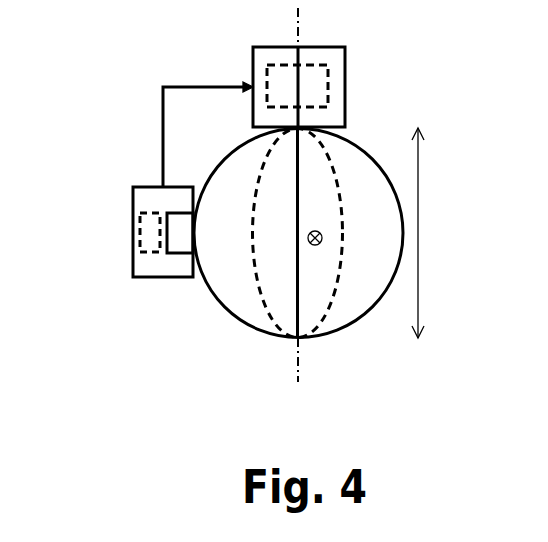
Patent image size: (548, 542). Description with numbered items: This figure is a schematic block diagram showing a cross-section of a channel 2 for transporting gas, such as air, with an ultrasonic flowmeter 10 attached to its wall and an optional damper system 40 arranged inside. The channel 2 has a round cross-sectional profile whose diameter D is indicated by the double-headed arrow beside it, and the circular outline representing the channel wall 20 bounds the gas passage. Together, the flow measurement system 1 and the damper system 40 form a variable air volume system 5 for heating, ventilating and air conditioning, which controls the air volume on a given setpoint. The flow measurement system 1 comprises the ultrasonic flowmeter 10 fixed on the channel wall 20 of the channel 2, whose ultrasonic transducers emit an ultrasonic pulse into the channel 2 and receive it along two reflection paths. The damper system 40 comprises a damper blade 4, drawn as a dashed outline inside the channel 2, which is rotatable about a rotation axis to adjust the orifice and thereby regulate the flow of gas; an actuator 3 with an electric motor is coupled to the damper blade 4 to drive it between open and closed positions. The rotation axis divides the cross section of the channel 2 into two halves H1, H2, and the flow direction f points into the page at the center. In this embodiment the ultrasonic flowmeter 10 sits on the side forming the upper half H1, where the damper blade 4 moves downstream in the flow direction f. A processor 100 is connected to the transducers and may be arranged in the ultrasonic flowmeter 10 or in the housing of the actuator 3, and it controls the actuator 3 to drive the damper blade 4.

The flow measurement system 1 is at (100, 290).
The channel 2 is at (222, 171).
The actuator 3 is at (337, 85).
The damper blade 4 is at (328, 275).
The variable air volume (VAV) system 5 is at (137, 58).
The ultrasonic flowmeter 10 is at (150, 265).
The surface of ball 20 is at (349, 330).
The damper system 40 is at (358, 118).
The processor 100 is at (283, 75).
The upper half H1 is at (237, 243).
The lower half H2 is at (388, 243).
The flow direction f is at (319, 222).
The diameter D is at (427, 233).